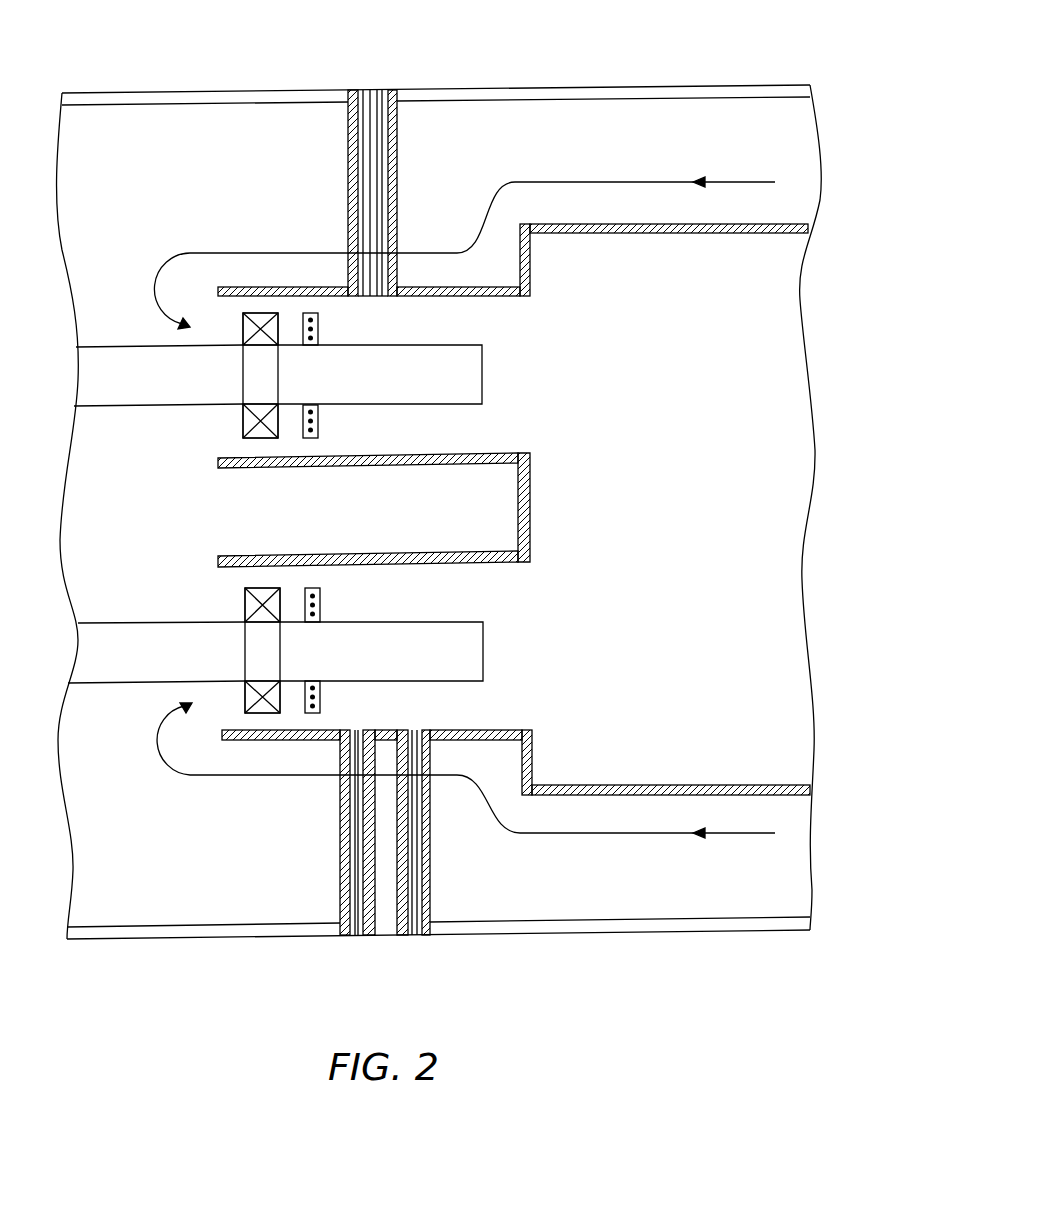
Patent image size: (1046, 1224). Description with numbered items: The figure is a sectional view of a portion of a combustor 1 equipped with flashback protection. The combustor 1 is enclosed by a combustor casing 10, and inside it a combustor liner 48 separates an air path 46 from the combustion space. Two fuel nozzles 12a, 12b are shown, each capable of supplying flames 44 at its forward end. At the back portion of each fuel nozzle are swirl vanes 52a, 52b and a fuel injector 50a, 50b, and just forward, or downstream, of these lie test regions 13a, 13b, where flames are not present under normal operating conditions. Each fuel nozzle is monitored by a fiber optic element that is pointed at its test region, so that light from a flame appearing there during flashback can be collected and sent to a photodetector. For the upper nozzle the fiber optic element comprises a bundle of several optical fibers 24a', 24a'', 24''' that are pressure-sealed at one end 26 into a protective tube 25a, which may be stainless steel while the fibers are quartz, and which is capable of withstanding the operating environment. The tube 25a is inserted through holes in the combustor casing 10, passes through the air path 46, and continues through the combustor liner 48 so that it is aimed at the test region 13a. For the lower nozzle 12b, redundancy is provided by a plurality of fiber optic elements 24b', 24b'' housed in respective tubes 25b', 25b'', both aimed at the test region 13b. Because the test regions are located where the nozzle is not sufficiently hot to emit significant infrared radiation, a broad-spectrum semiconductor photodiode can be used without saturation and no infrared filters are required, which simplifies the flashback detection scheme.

The combustor 1 is at (491, 70).
The combustor casing 10 is at (605, 87).
The fuel nozzle 12a is at (456, 391).
The fuel nozzle 12b is at (456, 666).
The test region 13a is at (425, 318).
The test region 13b is at (360, 716).
The optical fiber 24a' is at (409, 193).
The optical fiber 24a'' is at (423, 193).
The optical fiber 24''' is at (416, 193).
The protective tube 25a is at (398, 229).
The fiber optic element 24b' is at (325, 832).
The fiber optic element 24b'' is at (442, 832).
The protective tube 25b' is at (329, 832).
The protective tube 25b'' is at (462, 832).
The sealed end 26 is at (366, 303).
The flames 44 is at (490, 343).
The air path 46 is at (607, 182).
The combustor liner 48 is at (625, 224).
The fuel injector 50a is at (318, 322).
The fuel injector 50b is at (320, 600).
The swirl vanes 52a is at (243, 327).
The swirl vanes 52b is at (247, 697).